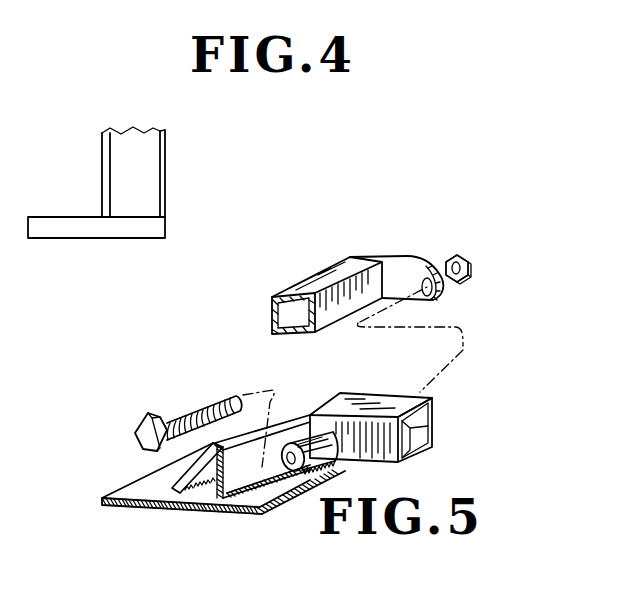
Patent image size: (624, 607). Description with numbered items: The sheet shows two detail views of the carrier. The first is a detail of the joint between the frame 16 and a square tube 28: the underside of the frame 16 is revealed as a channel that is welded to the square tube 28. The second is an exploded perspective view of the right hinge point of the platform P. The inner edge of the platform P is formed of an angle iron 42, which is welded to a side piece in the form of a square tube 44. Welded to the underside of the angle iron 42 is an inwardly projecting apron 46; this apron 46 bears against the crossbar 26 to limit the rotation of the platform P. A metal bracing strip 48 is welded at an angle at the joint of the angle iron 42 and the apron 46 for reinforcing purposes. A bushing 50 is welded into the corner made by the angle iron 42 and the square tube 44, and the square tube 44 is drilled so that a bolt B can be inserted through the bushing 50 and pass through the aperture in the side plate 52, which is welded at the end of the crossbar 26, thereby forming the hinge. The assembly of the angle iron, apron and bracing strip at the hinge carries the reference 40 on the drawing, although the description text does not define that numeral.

In FIG. 4, the frame 16 is at (102, 178).
In FIG. 4, the square tube 28 is at (63, 240).
In FIG. 5, the crossbar 26 is at (323, 268).
In FIG. 5, the side plate 52 is at (420, 262).
In FIG. 5, the angle iron 42 is at (290, 430).
In FIG. 5, the bushing 50 is at (330, 430).
In FIG. 5, the square tube 44 is at (386, 461).
In FIG. 5, the metal bracing strip 48 is at (178, 481).
In FIG. 5, the apron 46 is at (138, 507).
In FIG. 5, the stop assembly 40 is at (247, 463).
In FIG. 5, the bolt B is at (207, 400).
In FIG. 5, the platform P is at (277, 522).